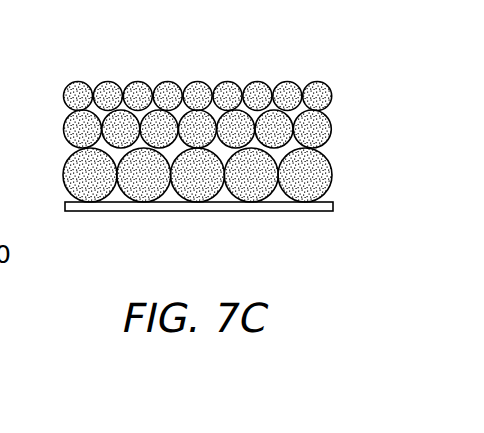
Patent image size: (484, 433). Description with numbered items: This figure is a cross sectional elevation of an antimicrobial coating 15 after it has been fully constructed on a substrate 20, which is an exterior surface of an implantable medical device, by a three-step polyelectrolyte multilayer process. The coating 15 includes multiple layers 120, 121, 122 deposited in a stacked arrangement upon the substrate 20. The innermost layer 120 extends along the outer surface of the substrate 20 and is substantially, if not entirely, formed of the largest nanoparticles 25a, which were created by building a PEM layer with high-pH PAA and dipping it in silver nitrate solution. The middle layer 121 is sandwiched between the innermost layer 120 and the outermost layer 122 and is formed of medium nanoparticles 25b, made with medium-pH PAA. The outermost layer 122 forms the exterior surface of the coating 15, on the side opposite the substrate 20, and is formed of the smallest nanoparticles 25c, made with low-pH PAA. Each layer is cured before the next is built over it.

The antimicrobial coating 15 is at (248, 145).
The substrate 20 is at (334, 207).
The largest nanoparticles 25a is at (272, 194).
The medium nanoparticles 25b is at (68, 117).
The smallest nanoparticles 25c is at (216, 88).
The innermost layer 120 is at (236, 211).
The middle layer 121 is at (214, 102).
The outermost layer 122 is at (237, 63).